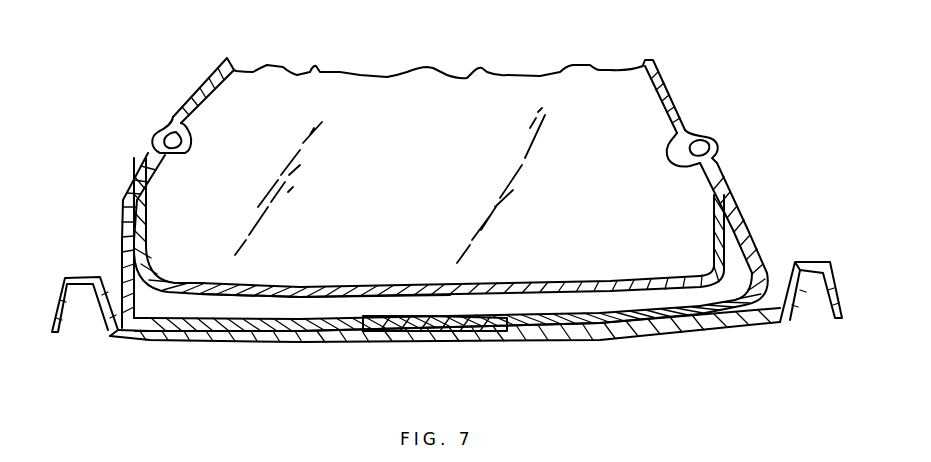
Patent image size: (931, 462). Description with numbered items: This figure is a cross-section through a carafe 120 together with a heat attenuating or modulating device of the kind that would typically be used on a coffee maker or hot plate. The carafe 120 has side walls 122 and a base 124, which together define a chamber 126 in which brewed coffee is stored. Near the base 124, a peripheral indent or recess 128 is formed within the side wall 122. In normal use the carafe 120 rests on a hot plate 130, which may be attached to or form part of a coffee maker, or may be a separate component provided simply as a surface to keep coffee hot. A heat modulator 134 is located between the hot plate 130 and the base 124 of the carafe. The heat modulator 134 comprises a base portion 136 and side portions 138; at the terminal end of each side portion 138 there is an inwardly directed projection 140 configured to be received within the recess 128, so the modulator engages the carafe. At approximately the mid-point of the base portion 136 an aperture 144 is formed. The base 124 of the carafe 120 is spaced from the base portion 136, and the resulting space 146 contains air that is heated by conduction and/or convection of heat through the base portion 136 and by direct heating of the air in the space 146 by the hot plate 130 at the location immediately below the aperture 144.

The carafe 120 is at (405, 80).
The side walls 122 is at (672, 100).
The base 124 is at (538, 280).
The chamber 126 is at (594, 108).
The peripheral recess 128 is at (189, 152).
The hot plate 130 is at (700, 325).
The heat modulator 134 is at (737, 200).
The base portion 136 is at (220, 333).
The side portions 138 is at (117, 233).
The inwardly directed projection 140 is at (162, 130).
The aperture 144 is at (500, 343).
The space 146 is at (313, 303).